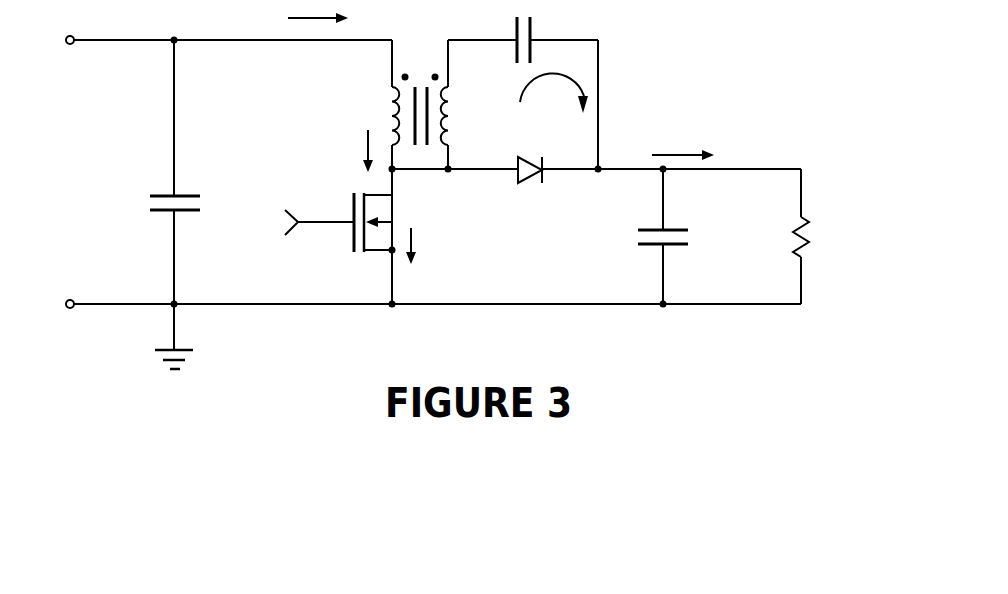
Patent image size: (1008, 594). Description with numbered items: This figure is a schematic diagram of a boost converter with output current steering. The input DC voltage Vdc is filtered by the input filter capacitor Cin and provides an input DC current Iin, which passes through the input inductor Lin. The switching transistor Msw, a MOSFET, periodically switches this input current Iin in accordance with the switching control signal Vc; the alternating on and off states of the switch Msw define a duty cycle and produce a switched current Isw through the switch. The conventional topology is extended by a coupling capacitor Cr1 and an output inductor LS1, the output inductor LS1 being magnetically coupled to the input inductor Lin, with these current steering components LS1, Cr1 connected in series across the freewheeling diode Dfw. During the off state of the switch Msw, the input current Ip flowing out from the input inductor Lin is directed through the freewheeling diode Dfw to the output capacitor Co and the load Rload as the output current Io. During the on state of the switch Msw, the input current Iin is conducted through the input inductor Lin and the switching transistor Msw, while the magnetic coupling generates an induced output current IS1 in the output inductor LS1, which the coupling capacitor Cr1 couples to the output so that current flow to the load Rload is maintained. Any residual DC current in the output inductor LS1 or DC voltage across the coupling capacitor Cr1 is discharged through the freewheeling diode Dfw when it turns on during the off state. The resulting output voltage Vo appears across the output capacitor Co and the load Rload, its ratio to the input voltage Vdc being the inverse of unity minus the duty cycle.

The input DC voltage Vdc is at (84, 127).
The input filter capacitor Cin is at (188, 222).
The input DC current Iin is at (302, 15).
The input inductor Lin is at (396, 110).
The output inductor LS1 is at (470, 116).
The input current Ip is at (355, 149).
The coupling capacitor Cr1 is at (544, 34).
The induced output current IS1 is at (556, 115).
The freewheeling diode Dfw is at (536, 190).
The switching transistor Msw is at (354, 241).
The switching control signal Vc is at (303, 222).
The switched current Isw is at (435, 234).
The output current Io is at (666, 145).
The output capacitor Co is at (673, 252).
The output voltage Vo is at (757, 202).
The load Rload is at (840, 237).